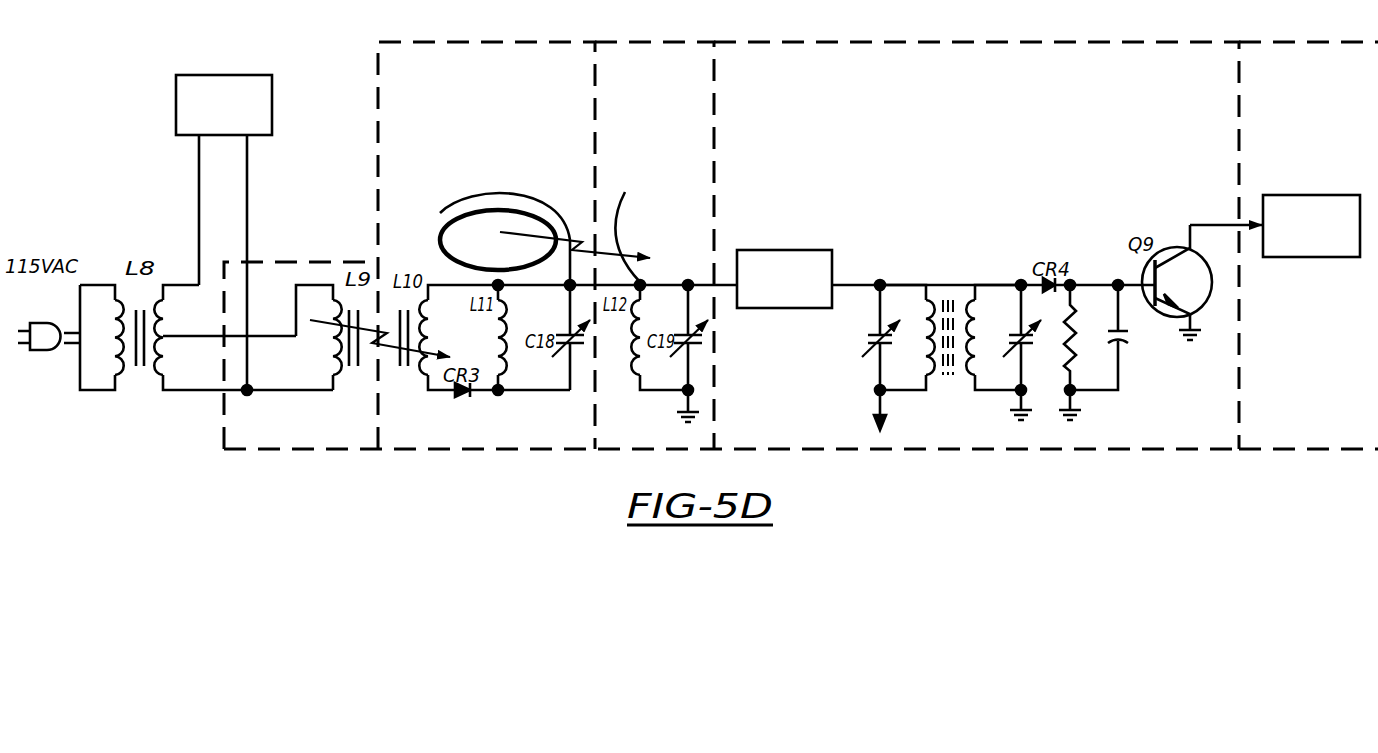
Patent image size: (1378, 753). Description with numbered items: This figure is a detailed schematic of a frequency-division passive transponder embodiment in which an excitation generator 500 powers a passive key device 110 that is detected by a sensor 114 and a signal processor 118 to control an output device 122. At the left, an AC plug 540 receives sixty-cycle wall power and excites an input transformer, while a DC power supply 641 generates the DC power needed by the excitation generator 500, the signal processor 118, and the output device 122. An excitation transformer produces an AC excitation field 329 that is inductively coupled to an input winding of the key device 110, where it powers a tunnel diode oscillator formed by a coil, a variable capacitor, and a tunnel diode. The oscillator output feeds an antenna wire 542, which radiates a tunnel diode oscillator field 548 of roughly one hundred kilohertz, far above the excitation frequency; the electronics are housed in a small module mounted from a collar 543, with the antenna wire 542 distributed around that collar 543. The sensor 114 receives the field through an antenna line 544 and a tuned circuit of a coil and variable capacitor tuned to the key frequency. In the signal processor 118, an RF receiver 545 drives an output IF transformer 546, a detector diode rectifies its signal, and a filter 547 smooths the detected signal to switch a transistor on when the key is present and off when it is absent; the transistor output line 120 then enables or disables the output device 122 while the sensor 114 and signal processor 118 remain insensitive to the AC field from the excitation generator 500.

The DC power supply 641 is at (222, 75).
The AC plug 540 is at (60, 351).
The excitation generator 500 is at (330, 449).
The key device 110 is at (490, 449).
The sensor 114 is at (655, 449).
The signal processor 118 is at (983, 449).
The output device 122 is at (1311, 449).
The excitation field 329 is at (440, 347).
The antenna wire 542 is at (478, 200).
The collar 543 is at (440, 245).
The tunnel diode oscillator field 548 is at (474, 240).
The antenna line 544 is at (618, 237).
The RF receiver 545 is at (778, 250).
The output IF transformer 546 is at (916, 280).
The filter 547 is at (1178, 412).
The output line 120 is at (1214, 225).